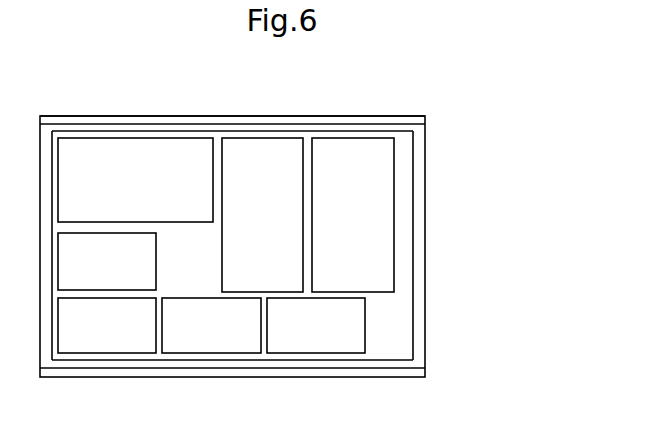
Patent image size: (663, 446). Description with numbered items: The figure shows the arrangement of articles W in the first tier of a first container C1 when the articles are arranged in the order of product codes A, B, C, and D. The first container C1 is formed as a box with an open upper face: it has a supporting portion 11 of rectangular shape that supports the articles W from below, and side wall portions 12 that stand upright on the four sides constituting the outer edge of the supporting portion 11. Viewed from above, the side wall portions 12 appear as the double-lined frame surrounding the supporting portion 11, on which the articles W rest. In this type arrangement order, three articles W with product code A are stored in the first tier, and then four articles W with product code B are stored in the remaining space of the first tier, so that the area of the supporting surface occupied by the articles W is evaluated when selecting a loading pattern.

The first container C1 is at (284, 224).
The supporting portion 11 is at (393, 338).
The side wall portion 12 is at (295, 116).
The article W is at (140, 152).